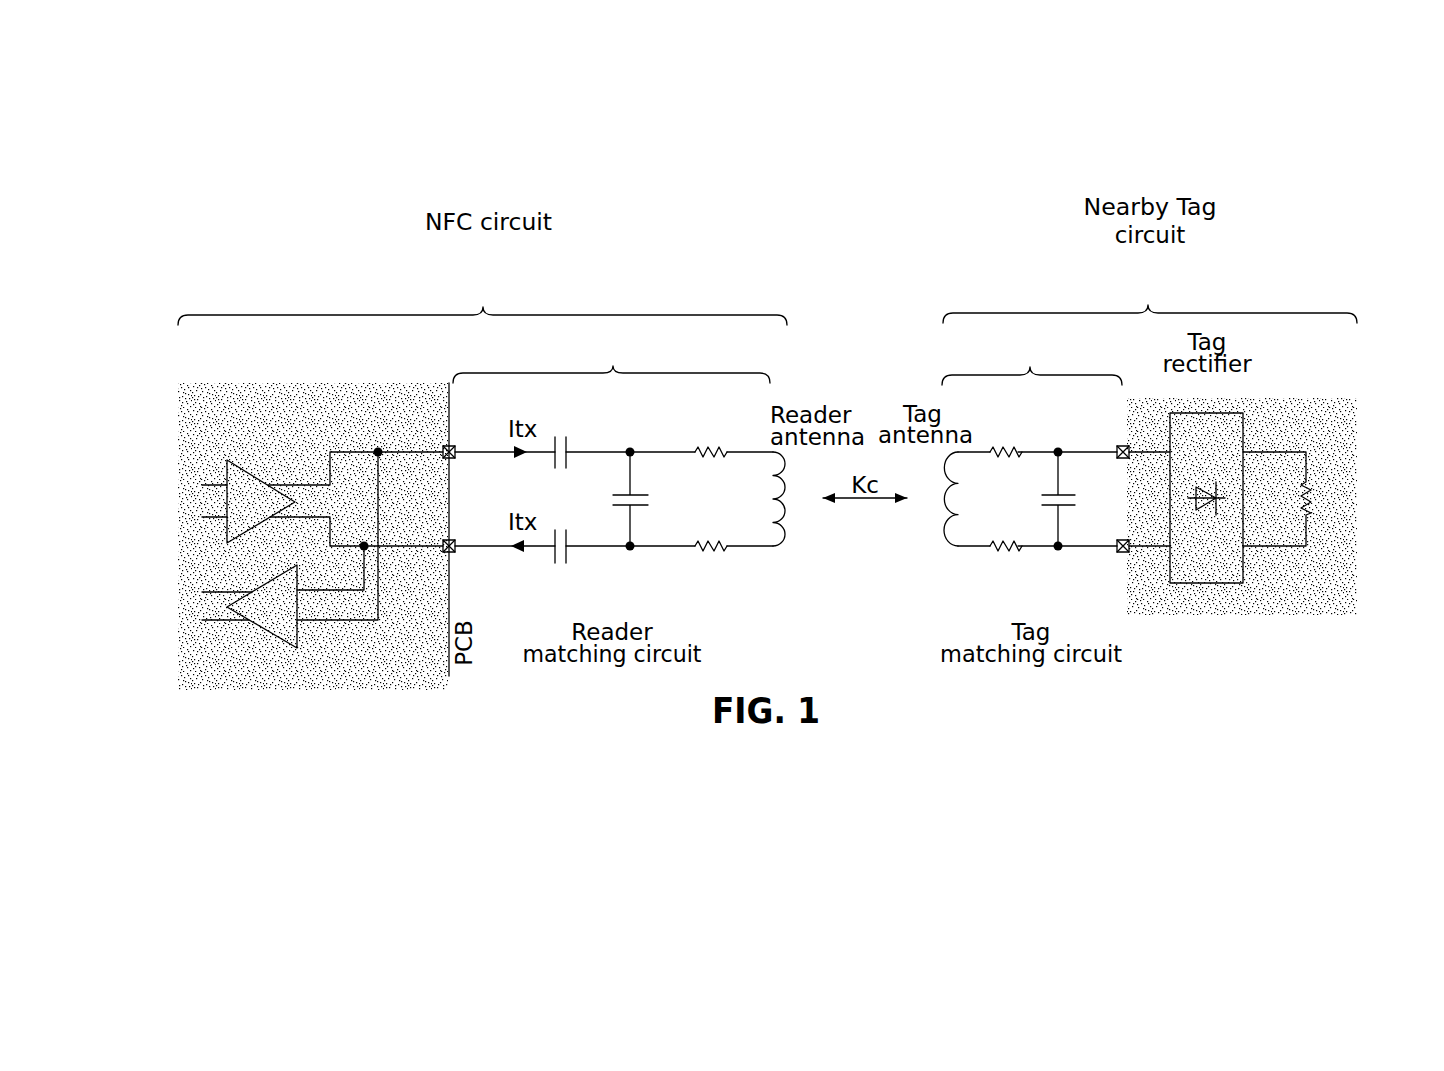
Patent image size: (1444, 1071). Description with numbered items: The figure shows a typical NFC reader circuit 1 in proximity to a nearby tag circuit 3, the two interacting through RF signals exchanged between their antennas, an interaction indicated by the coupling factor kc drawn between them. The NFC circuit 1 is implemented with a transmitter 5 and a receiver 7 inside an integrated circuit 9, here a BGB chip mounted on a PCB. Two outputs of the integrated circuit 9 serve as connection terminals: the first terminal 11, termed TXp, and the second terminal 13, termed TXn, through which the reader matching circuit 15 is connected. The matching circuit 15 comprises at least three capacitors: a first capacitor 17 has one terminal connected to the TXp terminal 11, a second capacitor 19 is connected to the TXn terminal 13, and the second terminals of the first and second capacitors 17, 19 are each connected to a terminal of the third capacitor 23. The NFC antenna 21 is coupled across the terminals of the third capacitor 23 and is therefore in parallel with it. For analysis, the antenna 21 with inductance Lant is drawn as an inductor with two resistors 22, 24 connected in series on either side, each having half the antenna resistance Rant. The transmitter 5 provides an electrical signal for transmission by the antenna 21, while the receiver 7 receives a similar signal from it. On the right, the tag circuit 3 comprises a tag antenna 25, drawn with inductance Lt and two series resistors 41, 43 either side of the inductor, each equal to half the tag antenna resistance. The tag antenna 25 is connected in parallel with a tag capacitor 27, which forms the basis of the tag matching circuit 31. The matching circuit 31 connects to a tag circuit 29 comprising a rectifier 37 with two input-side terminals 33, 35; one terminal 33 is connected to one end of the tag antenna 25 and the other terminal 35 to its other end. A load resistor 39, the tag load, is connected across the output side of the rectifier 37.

The NFC reader circuit 1 is at (482, 302).
The tag circuit 3 is at (1150, 299).
The transmitter 5 is at (226, 470).
The receiver 7 is at (283, 640).
The integrated circuit 9 is at (245, 397).
The first terminal 11 is at (452, 447).
The second terminal 13 is at (452, 540).
The reader matching circuit 15 is at (611, 362).
The first capacitor 17 is at (552, 463).
The second capacitor 19 is at (567, 540).
The NFC antenna 21 is at (782, 548).
The resistor 22 is at (729, 546).
The third capacitor 23 is at (622, 505).
The resistor 24 is at (729, 452).
The tag antenna 25 is at (947, 547).
The tag capacitor 27 is at (1068, 506).
The tag circuit 29 is at (1182, 600).
The tag matching circuit 31 is at (1032, 361).
The terminal 33 is at (1122, 553).
The terminal 35 is at (1120, 447).
The rectifier 37 is at (1228, 584).
The load resistor 39 is at (1306, 465).
The resistor 41 is at (990, 545).
The resistor 43 is at (1019, 456).